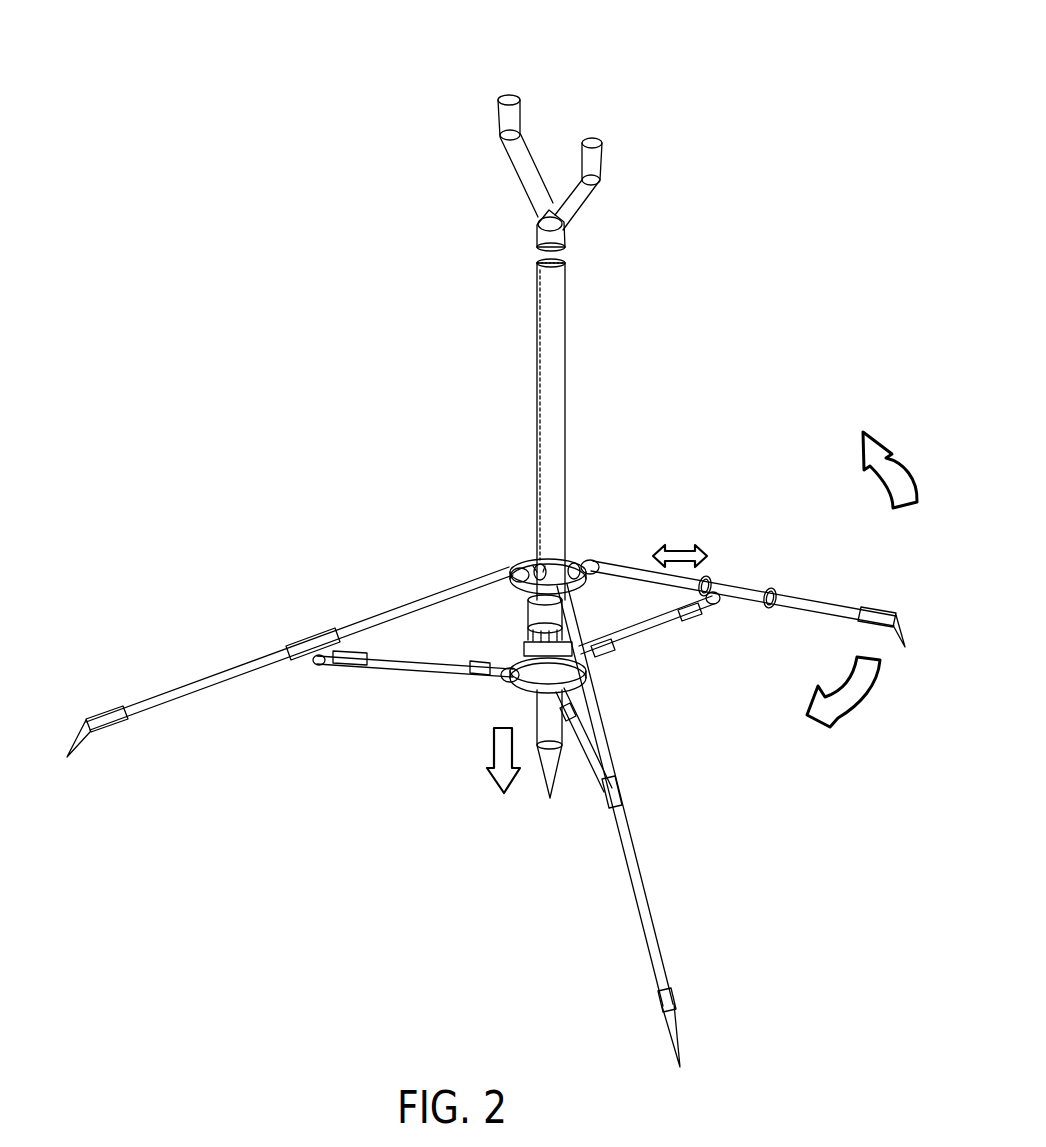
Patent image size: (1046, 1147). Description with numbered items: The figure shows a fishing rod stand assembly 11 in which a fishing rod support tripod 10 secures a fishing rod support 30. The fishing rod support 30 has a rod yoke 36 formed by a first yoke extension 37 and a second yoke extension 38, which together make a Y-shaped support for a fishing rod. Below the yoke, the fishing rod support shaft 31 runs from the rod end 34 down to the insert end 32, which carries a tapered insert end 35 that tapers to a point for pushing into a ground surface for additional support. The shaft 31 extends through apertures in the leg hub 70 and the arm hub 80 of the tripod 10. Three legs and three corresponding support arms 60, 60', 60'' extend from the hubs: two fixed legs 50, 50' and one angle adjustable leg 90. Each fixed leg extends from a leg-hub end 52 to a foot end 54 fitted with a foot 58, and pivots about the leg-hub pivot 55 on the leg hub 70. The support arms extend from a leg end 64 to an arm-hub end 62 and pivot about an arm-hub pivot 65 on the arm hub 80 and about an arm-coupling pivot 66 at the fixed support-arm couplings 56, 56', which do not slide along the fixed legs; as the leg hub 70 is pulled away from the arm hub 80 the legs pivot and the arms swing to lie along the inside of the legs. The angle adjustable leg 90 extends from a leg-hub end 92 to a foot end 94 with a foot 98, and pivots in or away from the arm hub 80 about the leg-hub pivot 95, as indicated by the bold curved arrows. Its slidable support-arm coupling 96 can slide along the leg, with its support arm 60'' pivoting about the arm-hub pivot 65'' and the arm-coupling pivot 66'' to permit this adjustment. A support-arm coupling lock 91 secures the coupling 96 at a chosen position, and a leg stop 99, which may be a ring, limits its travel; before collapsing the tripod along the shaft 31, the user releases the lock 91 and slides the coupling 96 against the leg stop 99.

The fishing rod support tripod 10 is at (415, 601).
The fishing rod stand assembly 11 is at (390, 316).
The fishing rod support 30 is at (550, 353).
The fishing rod support shaft 31 is at (533, 380).
The insert end 32 is at (549, 779).
The rod end 34 is at (540, 247).
The tapered insert end 35 is at (553, 793).
The rod yoke 36 is at (538, 227).
The first yoke extension 37 is at (507, 103).
The second yoke extension 38 is at (592, 150).
The fixed leg 50 is at (299, 648).
The fixed leg 50' is at (656, 825).
The leg-hub end 52 is at (517, 570).
The foot end 54 is at (107, 712).
The leg-hub pivot 55 is at (520, 573).
The fixed support-arm coupling 56 is at (297, 601).
The fixed support-arm coupling 56' is at (665, 787).
The foot 58 is at (68, 745).
The support arm 60 is at (415, 714).
The support arm 60' is at (584, 788).
The support arm 60'' is at (646, 664).
The arm-hub end 62 is at (481, 670).
The leg end 64 is at (331, 664).
The arm-hub pivot 65 is at (470, 703).
The arm-hub pivot 65'' is at (626, 696).
The arm-coupling pivot 66 is at (297, 707).
The arm-coupling pivot 66'' is at (703, 644).
The leg hub 70 is at (523, 587).
The arm hub 80 is at (513, 690).
The angle adjustable leg 90 is at (816, 606).
The support-arm coupling lock 91 is at (705, 576).
The leg-hub end 92 is at (598, 562).
The foot end 94 is at (874, 620).
The leg-hub pivot 95 is at (585, 562).
The slidable support-arm coupling 96 is at (723, 600).
The foot 98 is at (898, 626).
The leg stop 99 is at (770, 589).